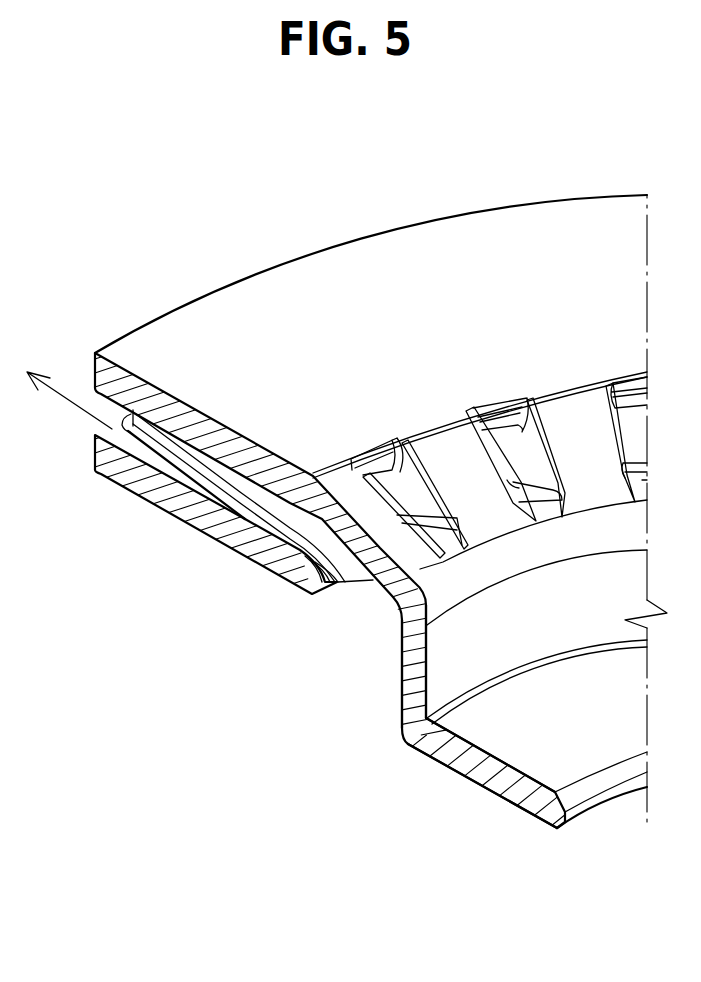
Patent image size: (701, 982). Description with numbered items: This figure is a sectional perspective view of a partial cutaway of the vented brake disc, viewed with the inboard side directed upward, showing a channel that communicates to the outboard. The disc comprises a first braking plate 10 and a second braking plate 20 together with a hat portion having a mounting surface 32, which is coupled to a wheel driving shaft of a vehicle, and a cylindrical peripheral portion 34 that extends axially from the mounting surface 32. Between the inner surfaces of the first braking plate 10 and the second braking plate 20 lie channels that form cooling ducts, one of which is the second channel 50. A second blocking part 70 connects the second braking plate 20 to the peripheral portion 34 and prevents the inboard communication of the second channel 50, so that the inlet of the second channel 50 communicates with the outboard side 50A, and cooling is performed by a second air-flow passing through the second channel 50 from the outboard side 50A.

The first braking plate 10 is at (222, 567).
The second braking plate 20 is at (519, 197).
The mounting surface 32 is at (536, 805).
The cylindrical peripheral portion 34 is at (417, 684).
The second channel 50 is at (153, 465).
The outboard side 50A is at (325, 535).
The second blocking part 70 is at (365, 505).